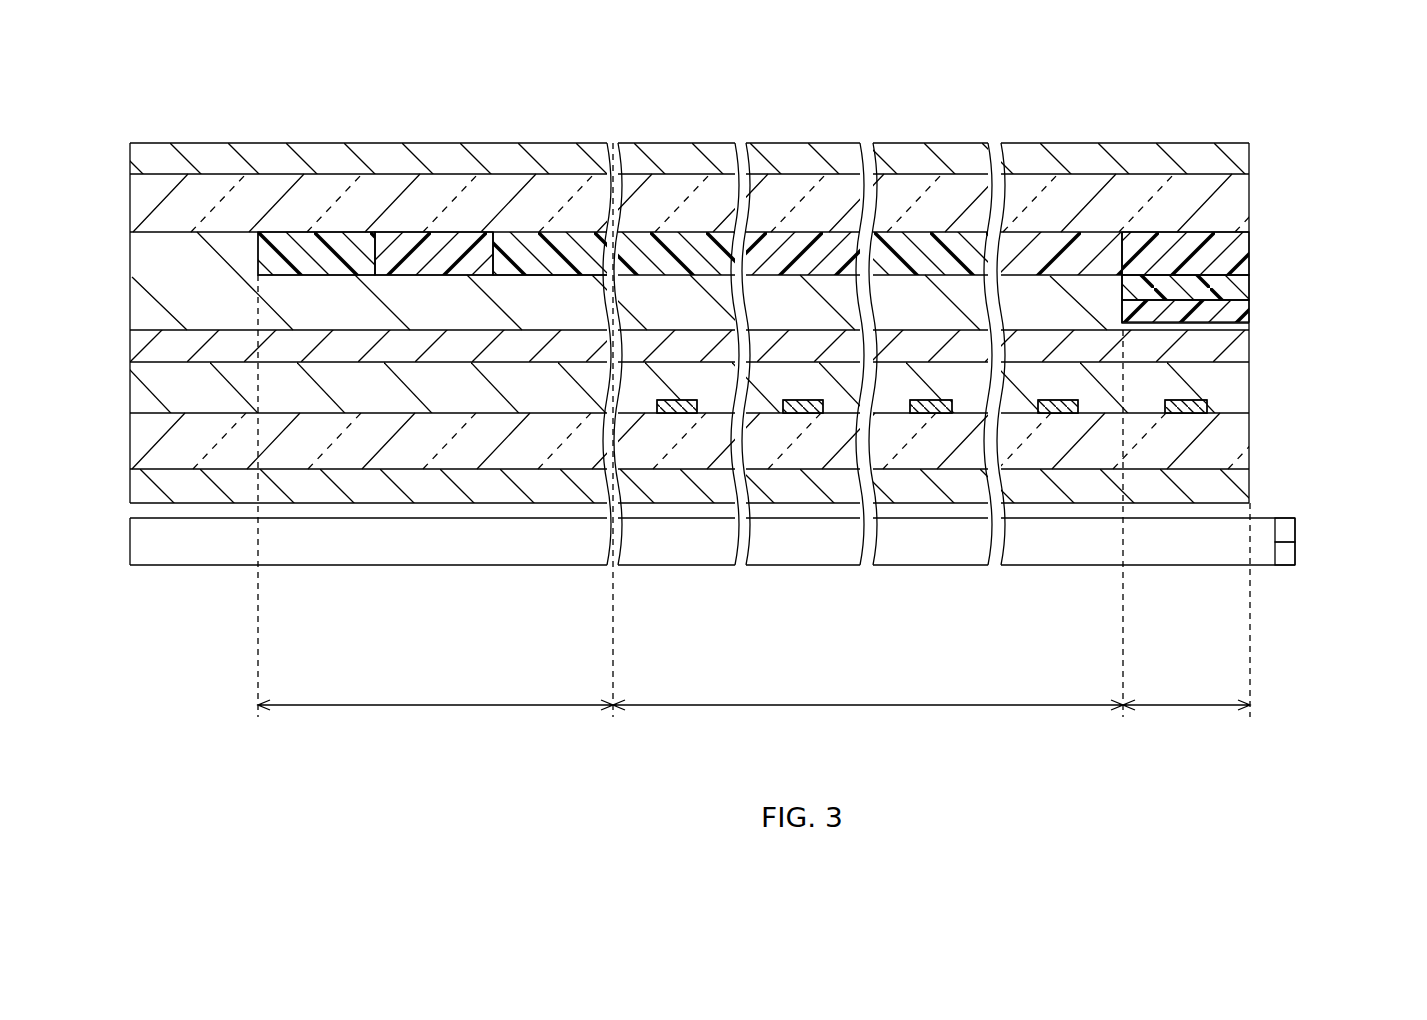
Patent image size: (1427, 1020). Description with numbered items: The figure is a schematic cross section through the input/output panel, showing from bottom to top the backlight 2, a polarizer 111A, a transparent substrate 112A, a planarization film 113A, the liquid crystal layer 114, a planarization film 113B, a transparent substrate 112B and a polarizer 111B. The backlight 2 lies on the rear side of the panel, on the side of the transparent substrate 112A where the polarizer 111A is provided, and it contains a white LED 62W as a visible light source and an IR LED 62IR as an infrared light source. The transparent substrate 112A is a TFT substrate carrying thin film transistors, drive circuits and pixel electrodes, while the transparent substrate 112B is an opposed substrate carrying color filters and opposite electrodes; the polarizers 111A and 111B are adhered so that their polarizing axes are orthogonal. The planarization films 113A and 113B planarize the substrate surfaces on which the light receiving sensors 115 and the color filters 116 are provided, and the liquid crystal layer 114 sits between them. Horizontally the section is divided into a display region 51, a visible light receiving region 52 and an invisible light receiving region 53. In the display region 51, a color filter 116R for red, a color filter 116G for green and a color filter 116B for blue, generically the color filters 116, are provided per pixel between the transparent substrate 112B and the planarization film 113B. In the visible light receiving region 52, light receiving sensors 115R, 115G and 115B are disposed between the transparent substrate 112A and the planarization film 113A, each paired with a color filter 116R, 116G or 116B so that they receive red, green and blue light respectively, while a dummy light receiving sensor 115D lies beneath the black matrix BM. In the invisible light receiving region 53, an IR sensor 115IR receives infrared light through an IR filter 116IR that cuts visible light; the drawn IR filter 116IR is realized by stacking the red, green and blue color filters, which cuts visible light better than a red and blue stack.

The backlight 2 is at (206, 548).
The display region 51 is at (435, 443).
The visible light receiving region 52 is at (868, 536).
The invisible light receiving region 53 is at (1186, 623).
The white LED 62W is at (1284, 531).
The IR LED 62IR is at (1284, 558).
The polarizer 111A is at (1241, 490).
The polarizer 111B is at (1241, 163).
The transparent substrate 112A is at (1241, 443).
The transparent substrate 112B is at (1241, 208).
The planarization film 113A is at (1241, 392).
The planarization film 113B is at (1097, 307).
The liquid crystal layer 114 is at (1241, 349).
The light receiving sensor 115 is at (650, 622).
The light receiving sensor 115R is at (686, 413).
The light receiving sensor 115G is at (812, 413).
The light receiving sensor 115B is at (940, 413).
The light receiving sensor 115D is at (1065, 413).
The IR sensor 115IR is at (1195, 413).
The color filters 116 is at (295, 81).
The color filter for red 116R is at (318, 242).
The color filter for green 116G is at (437, 242).
The color filter for blue 116B is at (553, 242).
The IR filter 116IR is at (1337, 248).
The black matrix BM is at (1022, 250).